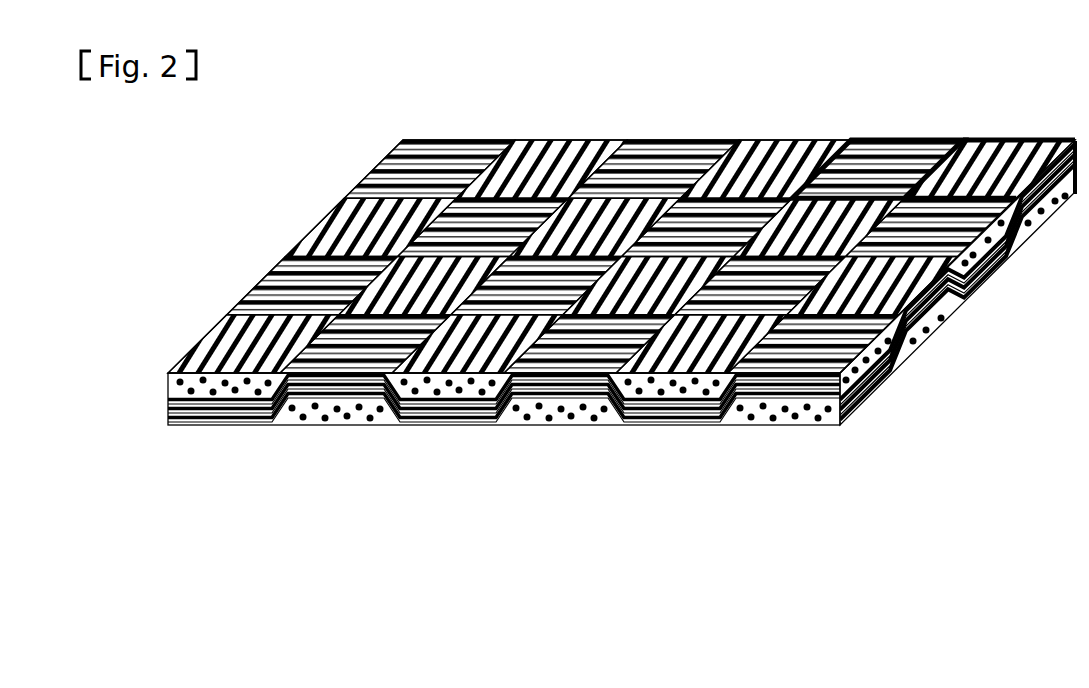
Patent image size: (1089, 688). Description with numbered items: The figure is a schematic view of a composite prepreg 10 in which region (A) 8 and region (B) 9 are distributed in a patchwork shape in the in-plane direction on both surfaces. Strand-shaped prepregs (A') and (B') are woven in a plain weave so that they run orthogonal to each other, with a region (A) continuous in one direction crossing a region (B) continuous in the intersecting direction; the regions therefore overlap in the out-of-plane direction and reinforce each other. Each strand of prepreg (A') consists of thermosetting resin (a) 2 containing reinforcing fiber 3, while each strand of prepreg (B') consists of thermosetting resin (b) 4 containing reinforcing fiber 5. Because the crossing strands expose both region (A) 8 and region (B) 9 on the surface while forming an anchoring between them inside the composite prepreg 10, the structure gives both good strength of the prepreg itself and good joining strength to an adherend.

The thermosetting resin (a) 2 is at (298, 412).
The reinforcing fiber contained in strand-shaped prepreg (A') 3 is at (355, 410).
The thermosetting resin (b) 4 is at (430, 413).
The reinforcing fiber contained in strand-shaped prepreg (B') 5 is at (480, 413).
The region (A) on prepreg surface 8 is at (958, 120).
The region (B) on prepreg surface 9 is at (847, 120).
The composite prepreg 10 is at (609, 285).